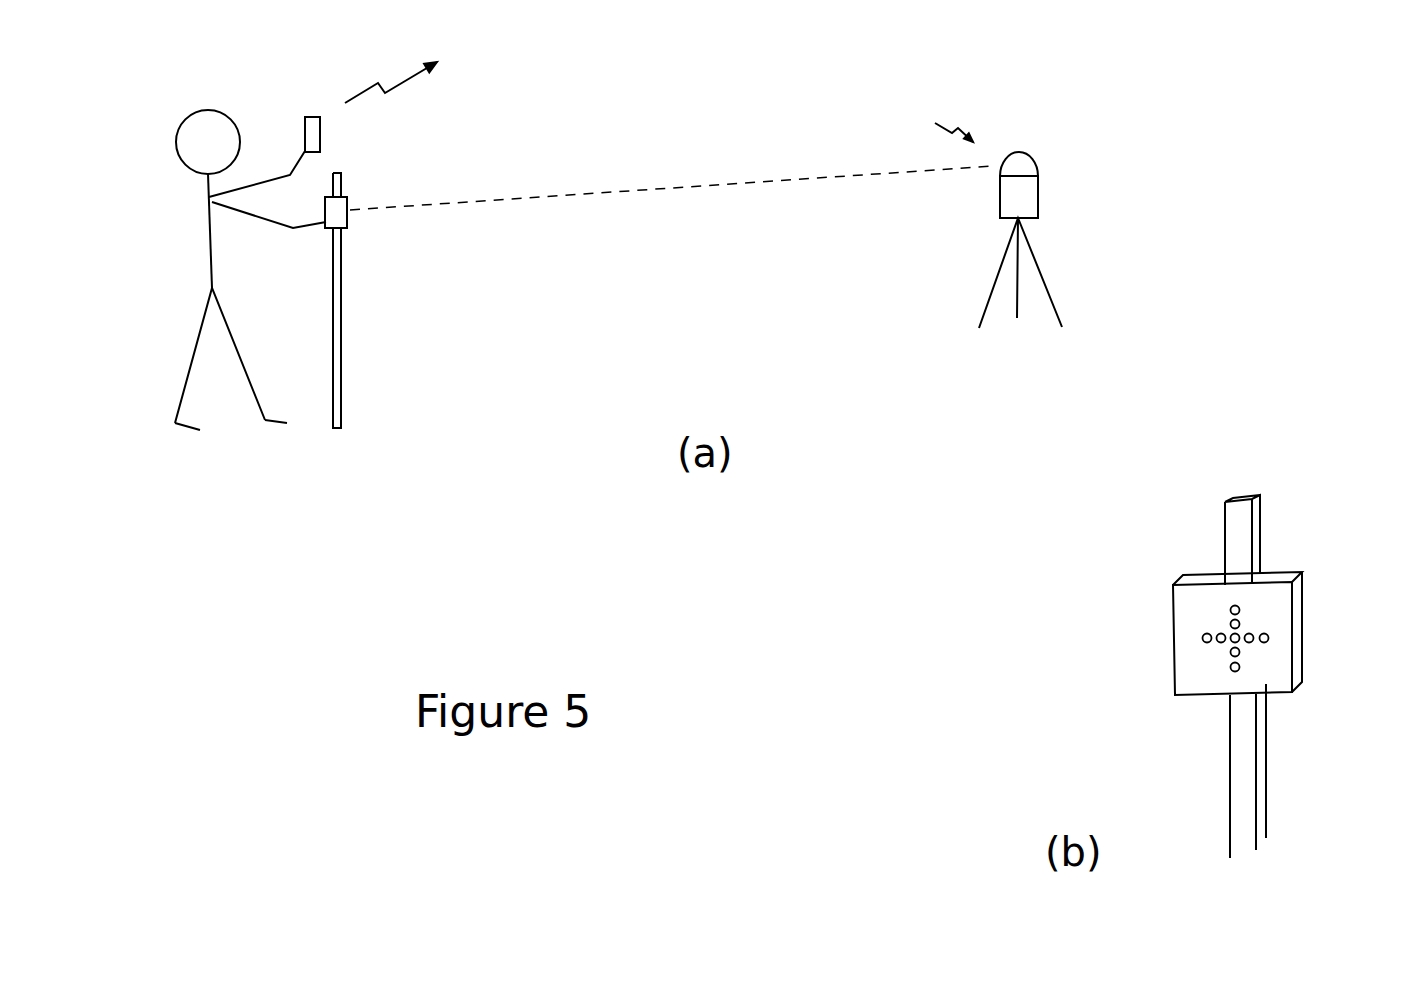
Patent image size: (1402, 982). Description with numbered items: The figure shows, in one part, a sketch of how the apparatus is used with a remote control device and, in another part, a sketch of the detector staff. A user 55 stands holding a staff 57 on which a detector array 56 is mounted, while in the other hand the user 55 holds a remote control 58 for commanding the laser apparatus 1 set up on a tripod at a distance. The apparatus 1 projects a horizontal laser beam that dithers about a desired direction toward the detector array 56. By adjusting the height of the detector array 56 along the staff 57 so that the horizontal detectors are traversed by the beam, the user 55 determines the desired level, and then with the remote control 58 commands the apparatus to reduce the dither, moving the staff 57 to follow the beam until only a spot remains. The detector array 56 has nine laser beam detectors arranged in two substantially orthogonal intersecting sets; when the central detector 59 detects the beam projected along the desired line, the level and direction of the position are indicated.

The surveying instrument 1 is at (1040, 188).
The user 55 is at (207, 247).
The detector array 56 is at (337, 213).
The staff 57 is at (342, 332).
The remote control 58 is at (305, 117).
The central detector 59 is at (1220, 647).